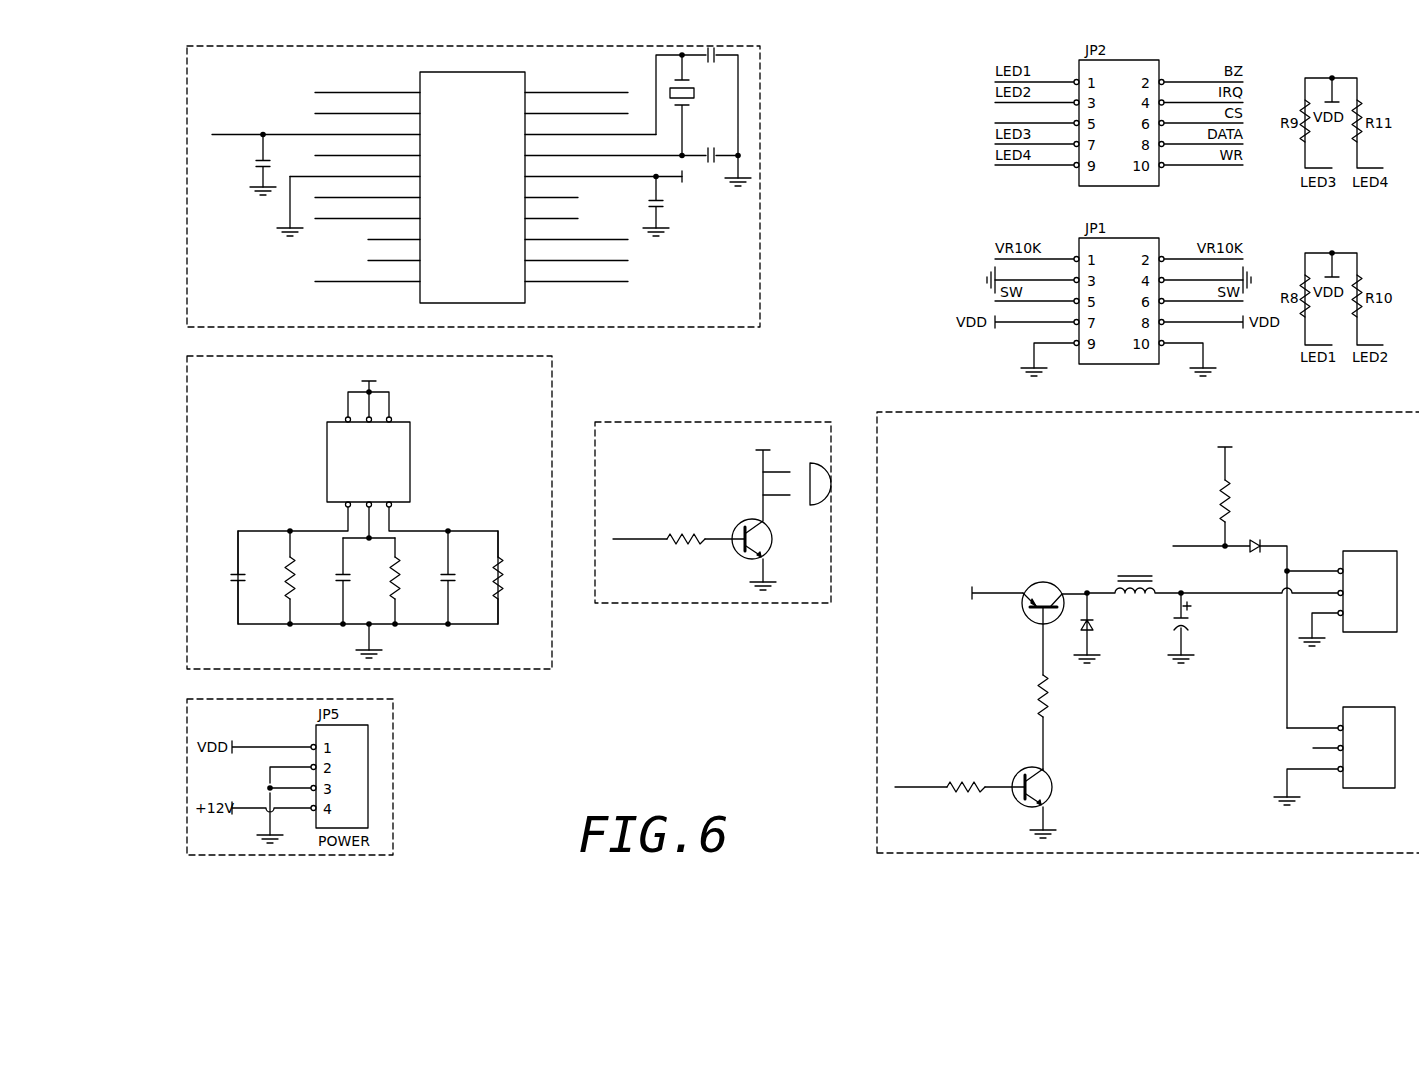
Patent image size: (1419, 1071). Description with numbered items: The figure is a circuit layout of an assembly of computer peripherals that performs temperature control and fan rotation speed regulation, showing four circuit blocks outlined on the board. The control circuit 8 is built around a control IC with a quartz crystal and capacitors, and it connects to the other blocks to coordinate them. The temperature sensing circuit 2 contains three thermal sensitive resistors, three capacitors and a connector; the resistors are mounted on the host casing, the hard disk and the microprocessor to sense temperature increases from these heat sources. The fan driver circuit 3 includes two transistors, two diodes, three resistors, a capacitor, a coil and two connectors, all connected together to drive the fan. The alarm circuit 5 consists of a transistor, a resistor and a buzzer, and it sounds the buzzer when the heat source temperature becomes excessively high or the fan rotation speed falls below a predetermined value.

The control circuit 8 is at (748, 273).
The temperature sensing circuit 2 is at (540, 384).
The alarm circuit 5 is at (703, 578).
The fan driver circuit 3 is at (877, 706).